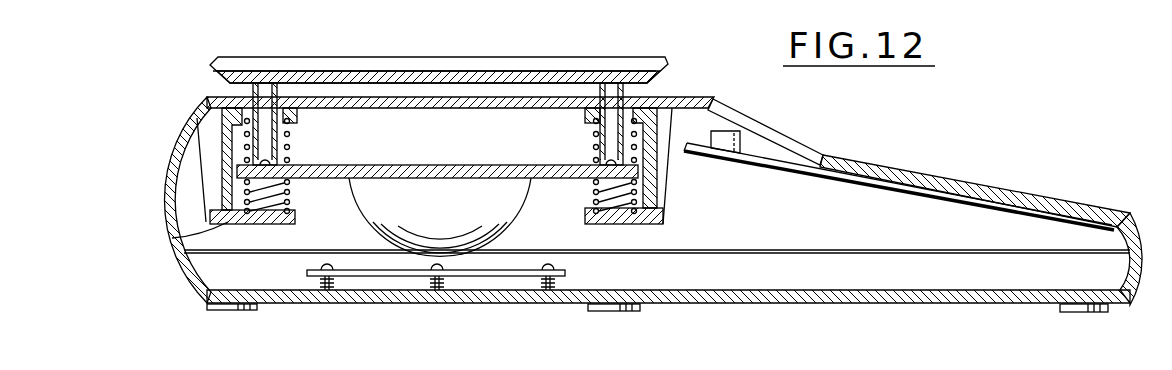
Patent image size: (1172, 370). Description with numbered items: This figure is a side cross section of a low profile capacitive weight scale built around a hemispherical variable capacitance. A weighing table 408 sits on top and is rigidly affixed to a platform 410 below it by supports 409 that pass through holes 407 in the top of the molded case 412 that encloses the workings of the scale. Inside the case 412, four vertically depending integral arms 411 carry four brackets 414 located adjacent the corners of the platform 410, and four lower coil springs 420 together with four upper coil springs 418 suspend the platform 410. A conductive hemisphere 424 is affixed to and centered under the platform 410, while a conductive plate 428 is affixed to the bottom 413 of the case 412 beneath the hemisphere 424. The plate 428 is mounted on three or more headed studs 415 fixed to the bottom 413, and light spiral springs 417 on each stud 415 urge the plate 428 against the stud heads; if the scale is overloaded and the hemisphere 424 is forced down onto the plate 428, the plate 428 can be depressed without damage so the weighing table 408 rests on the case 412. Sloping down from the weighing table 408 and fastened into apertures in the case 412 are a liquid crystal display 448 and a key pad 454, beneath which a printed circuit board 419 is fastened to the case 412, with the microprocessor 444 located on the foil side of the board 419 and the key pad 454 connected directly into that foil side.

The holes 407 is at (597, 125).
The weighing table 408 is at (520, 72).
The supports 409 is at (612, 98).
The platform 410 is at (432, 167).
The vertically depending integral arms 411 is at (207, 140).
The molded case 412 is at (178, 201).
The bottom 413 is at (738, 301).
The brackets 414 is at (190, 237).
The headed studs 415 is at (320, 265).
The spiral springs 417 is at (327, 284).
The upper coil springs 418 is at (292, 148).
The printed circuit board 419 is at (877, 186).
The lower coil springs 420 is at (290, 193).
The conductive hemisphere 424 is at (514, 210).
The conductive plate 428 is at (508, 276).
The microprocessor 444 is at (727, 151).
The liquid crystal display 448 is at (777, 135).
The key pad 454 is at (962, 180).